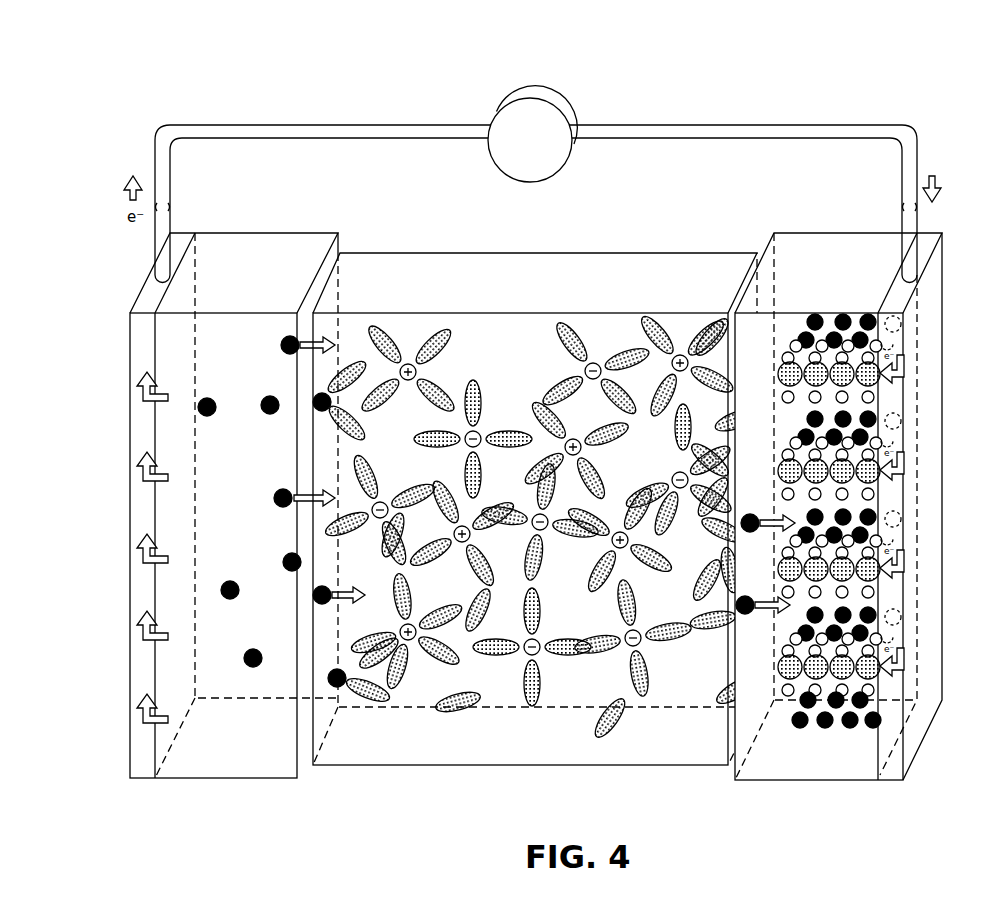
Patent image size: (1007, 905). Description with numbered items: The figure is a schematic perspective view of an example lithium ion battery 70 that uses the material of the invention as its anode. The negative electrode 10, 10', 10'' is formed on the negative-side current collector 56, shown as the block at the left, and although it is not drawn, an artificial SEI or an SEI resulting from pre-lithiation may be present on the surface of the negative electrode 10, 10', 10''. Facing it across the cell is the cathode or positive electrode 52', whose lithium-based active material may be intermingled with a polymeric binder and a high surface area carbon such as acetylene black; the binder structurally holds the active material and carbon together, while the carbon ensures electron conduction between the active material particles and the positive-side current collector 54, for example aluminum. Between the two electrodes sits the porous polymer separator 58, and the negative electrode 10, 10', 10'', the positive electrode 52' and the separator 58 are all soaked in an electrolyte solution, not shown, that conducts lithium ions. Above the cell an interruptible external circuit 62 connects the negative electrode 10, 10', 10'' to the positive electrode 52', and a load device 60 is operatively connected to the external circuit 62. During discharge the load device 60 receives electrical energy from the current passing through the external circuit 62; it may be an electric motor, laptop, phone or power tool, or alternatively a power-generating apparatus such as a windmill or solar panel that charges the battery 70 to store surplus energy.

The negative electrode 10 is at (246, 479).
The negative electrode 10' is at (246, 479).
The negative electrode 10'' is at (246, 479).
The positive electrode 52' is at (864, 475).
The positive-side current collector 54 is at (893, 768).
The negative-side current collector 56 is at (143, 742).
The porous polymer separator 58 is at (602, 288).
The load device 60 is at (537, 82).
The external circuit 62 is at (334, 125).
The lithium ion battery 70 is at (937, 140).